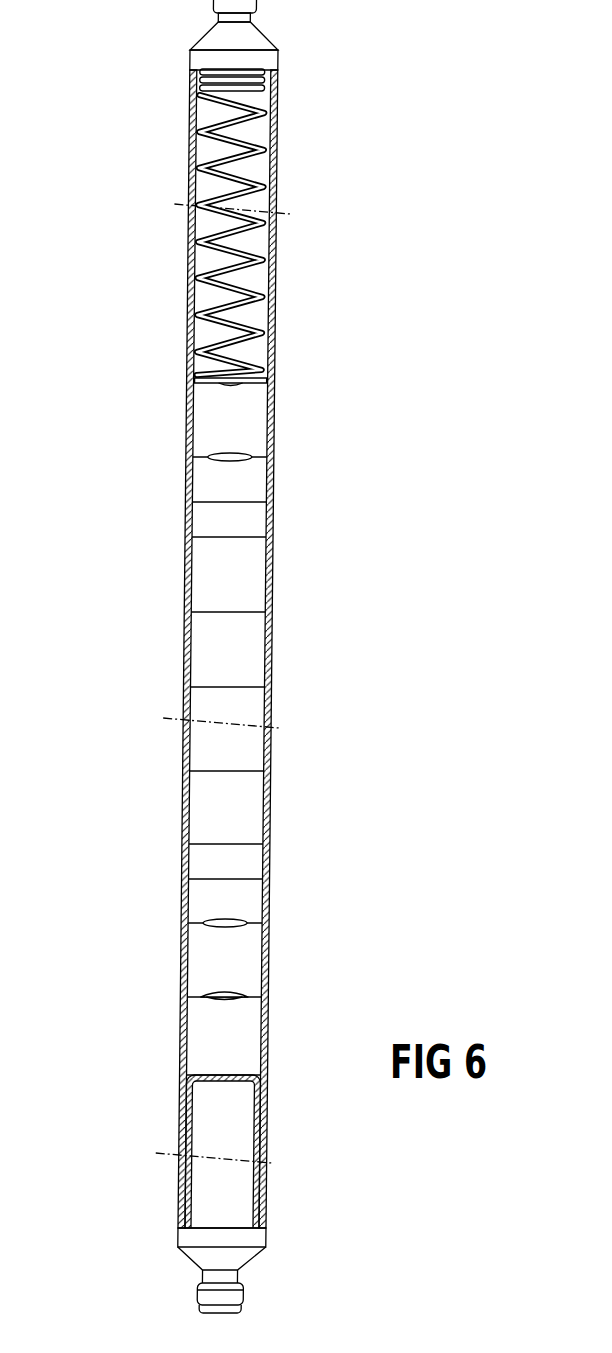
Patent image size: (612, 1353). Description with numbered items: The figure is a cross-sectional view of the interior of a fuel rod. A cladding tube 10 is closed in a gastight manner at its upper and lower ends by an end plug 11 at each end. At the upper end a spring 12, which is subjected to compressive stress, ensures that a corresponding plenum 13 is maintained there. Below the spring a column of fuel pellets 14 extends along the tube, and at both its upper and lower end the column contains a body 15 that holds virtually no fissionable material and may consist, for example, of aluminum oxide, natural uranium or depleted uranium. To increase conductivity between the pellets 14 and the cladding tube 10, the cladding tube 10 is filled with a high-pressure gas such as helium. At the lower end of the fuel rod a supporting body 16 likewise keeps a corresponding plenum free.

The cladding tube 10 is at (279, 168).
The end plug 11 is at (215, 38).
The spring 12 is at (220, 292).
The plenum 13 is at (259, 133).
The fuel pellets 14 is at (205, 796).
The body 15 is at (208, 400).
The supporting body 16 is at (186, 1128).